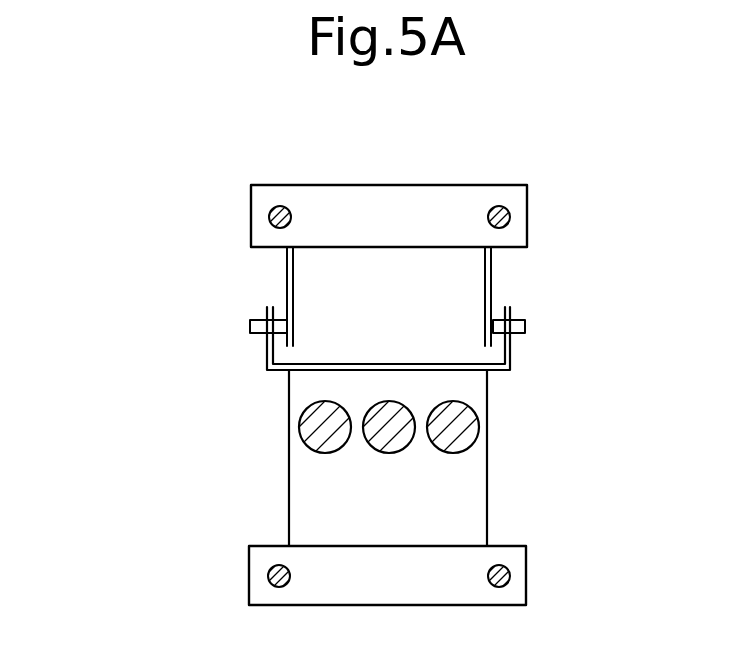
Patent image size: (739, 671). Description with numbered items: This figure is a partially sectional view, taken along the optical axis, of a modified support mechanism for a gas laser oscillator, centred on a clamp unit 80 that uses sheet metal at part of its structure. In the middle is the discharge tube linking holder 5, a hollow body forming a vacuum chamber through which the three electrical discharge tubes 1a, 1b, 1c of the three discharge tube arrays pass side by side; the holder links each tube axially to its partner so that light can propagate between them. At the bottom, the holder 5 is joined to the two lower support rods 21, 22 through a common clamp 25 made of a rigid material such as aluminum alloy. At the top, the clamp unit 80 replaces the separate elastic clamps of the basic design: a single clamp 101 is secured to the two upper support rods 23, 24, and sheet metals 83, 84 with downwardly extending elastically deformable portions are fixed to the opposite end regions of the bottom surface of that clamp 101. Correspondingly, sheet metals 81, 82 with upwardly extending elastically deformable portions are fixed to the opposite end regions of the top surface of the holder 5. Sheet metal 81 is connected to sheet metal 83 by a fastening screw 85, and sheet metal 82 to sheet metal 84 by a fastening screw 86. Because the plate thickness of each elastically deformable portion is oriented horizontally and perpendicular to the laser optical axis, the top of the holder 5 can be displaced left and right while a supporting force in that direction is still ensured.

The clamp 101 is at (402, 207).
The support rod 23 is at (274, 207).
The support rod 24 is at (501, 207).
The sheet metal 83 is at (288, 270).
The sheet metal 84 is at (492, 275).
The clamp unit 80 is at (163, 298).
The sheet metal 81 is at (270, 352).
The sheet metal 82 is at (512, 353).
The fastening screw 85 is at (260, 318).
The fastening screw 86 is at (520, 322).
The discharge tube linking holder 5 is at (475, 497).
The electrical discharge tube 1a is at (313, 420).
The electrical discharge tube 1b is at (382, 442).
The electrical discharge tube 1c is at (463, 425).
The clamp 25 is at (382, 587).
The support rod 21 is at (268, 576).
The support rod 22 is at (509, 578).